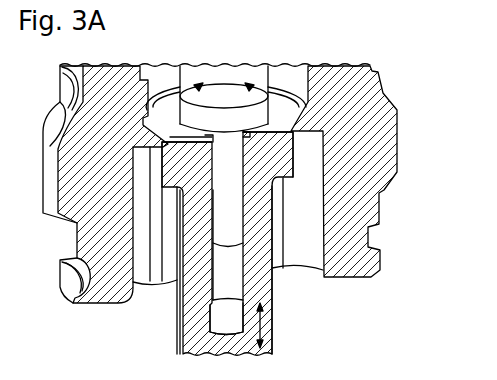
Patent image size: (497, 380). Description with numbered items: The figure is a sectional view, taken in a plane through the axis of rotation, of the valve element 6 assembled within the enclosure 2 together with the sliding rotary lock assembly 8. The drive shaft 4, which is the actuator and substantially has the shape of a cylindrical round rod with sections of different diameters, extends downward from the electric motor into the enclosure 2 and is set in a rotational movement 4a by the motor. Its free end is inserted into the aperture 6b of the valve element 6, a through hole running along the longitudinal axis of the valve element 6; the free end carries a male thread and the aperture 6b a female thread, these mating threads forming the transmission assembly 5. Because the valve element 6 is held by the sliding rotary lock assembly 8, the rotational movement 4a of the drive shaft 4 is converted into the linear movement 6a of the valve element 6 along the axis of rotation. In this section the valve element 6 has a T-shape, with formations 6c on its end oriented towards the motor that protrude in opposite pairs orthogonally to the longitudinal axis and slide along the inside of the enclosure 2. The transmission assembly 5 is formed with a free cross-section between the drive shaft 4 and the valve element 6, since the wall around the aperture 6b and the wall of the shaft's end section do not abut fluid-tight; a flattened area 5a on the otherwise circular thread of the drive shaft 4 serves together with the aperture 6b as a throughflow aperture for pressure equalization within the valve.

The enclosure 2 is at (357, 104).
The drive shaft 4 is at (245, 82).
The rotational movement 4a is at (197, 80).
The transmission assembly 5 is at (247, 278).
The flattened area 5a is at (204, 288).
The valve element 6 is at (190, 304).
The linear movement 6a is at (273, 334).
The aperture 6b is at (209, 330).
The formations 6c is at (287, 148).
The sliding rotary lock assembly 8 is at (295, 208).